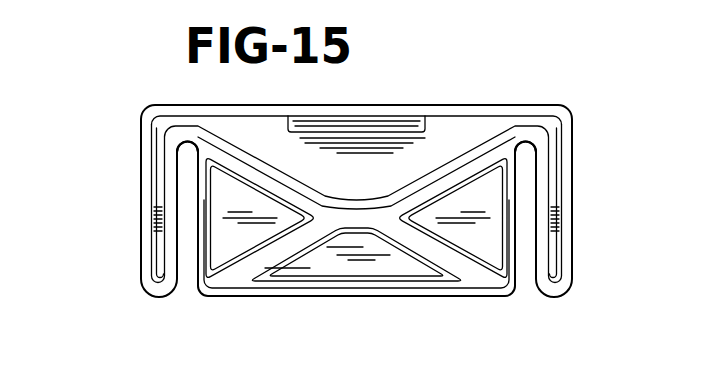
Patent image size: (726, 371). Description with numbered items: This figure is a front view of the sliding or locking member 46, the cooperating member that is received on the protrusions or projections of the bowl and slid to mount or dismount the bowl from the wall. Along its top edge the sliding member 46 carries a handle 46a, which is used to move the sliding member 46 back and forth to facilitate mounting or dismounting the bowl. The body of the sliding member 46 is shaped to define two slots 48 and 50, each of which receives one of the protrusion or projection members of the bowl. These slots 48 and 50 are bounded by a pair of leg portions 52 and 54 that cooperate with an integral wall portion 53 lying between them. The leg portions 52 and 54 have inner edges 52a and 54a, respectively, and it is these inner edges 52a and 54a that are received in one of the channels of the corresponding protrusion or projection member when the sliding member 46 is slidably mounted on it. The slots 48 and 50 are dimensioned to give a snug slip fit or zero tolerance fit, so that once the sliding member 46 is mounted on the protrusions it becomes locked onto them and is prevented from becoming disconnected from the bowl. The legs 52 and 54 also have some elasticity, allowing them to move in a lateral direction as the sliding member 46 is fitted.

The sliding member 46 is at (147, 103).
The handle 46a is at (372, 116).
The slot 48 is at (532, 255).
The slot 50 is at (193, 253).
The leg portion 52 is at (558, 200).
The inner edge 52a is at (533, 170).
The integral wall portion 53 is at (367, 195).
The leg portion 54 is at (183, 205).
The inner edge 54a is at (182, 166).